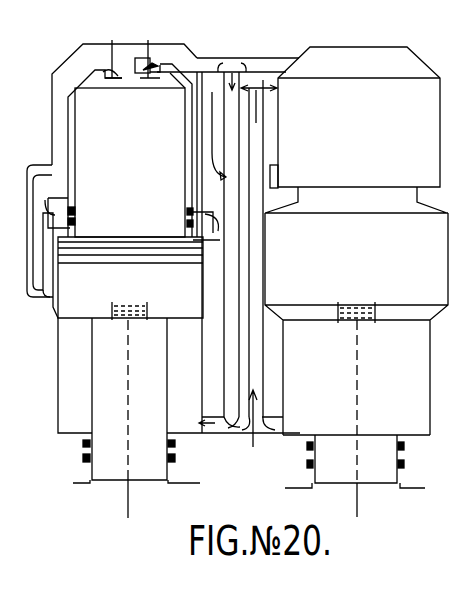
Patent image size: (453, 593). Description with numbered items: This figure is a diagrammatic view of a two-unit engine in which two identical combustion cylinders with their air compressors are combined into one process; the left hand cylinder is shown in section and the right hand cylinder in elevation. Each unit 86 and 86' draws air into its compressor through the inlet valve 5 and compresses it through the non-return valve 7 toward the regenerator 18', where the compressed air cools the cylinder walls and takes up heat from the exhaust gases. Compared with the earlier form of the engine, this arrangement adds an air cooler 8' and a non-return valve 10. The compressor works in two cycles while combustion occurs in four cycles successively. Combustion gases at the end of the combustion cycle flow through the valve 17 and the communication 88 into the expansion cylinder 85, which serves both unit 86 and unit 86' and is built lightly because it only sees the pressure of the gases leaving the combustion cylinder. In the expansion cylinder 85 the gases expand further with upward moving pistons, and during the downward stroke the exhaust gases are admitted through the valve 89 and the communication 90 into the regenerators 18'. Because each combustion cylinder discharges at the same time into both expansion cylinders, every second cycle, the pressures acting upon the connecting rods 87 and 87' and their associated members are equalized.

The regenerator 18' is at (245, 225).
The exhaust valve 17 is at (156, 63).
The communication 88 is at (207, 62).
The non-return valve 10 is at (45, 157).
The inlet valve 5 is at (55, 214).
The non-return valve 7 is at (193, 228).
The air cooler 8' is at (40, 319).
The expansion cylinder 85 is at (75, 370).
The unit 86 is at (143, 463).
The unit 86' is at (348, 395).
The connecting rod 87 is at (97, 429).
The connecting rod 87' is at (377, 433).
The exhaust valve 89 is at (253, 447).
The communication 90 is at (255, 330).